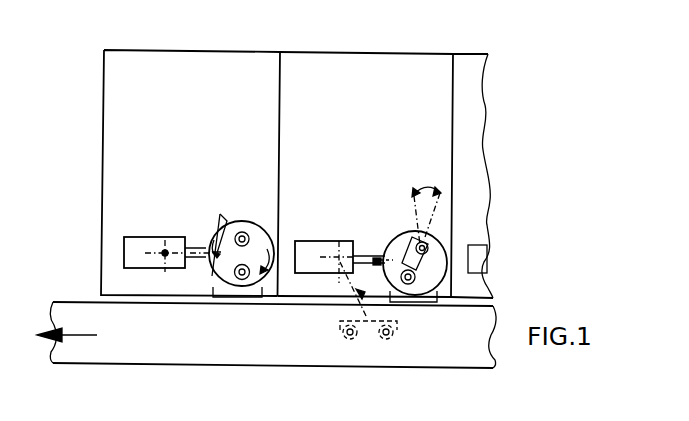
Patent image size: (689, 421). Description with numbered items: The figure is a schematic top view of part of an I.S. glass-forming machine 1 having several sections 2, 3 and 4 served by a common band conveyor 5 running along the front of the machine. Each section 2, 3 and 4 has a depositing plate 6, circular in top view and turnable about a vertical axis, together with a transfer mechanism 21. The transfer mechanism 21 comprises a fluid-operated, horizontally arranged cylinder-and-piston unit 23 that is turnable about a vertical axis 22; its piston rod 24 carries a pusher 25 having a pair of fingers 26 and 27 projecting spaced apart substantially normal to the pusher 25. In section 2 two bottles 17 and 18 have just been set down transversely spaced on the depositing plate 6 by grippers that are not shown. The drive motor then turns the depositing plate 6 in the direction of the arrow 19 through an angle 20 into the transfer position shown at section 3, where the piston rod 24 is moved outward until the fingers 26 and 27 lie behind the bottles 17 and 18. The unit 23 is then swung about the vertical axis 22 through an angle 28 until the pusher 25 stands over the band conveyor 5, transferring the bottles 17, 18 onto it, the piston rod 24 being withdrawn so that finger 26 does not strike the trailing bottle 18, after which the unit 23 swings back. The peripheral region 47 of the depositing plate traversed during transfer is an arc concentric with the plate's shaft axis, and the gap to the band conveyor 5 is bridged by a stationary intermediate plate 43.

The glass-forming machine 1 is at (62, 104).
The section 2 is at (218, 44).
The section 3 is at (345, 45).
The section 4 is at (474, 45).
The band conveyor 5 is at (458, 369).
The depositing plate 6 is at (270, 228).
The bottle 17 is at (243, 280).
The bottle 18 is at (243, 232).
The arrow 19 is at (281, 268).
The angle 20 is at (428, 186).
The transfer mechanism 21 is at (129, 231).
The vertical axis 22 is at (164, 256).
The cylinder-and-piston unit 23 is at (146, 237).
The piston rod 24 is at (190, 250).
The pusher 25 is at (214, 228).
The finger 26 is at (212, 276).
The finger 27 is at (233, 221).
The angle 28 is at (393, 300).
The intermediate plate 43 is at (222, 297).
The peripheral region 47 is at (272, 268).